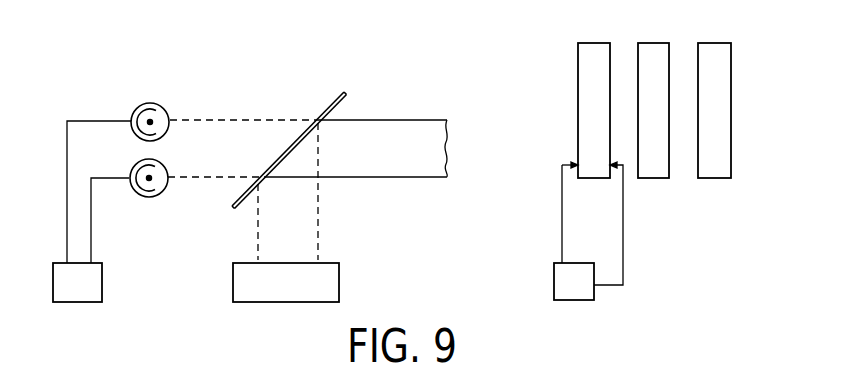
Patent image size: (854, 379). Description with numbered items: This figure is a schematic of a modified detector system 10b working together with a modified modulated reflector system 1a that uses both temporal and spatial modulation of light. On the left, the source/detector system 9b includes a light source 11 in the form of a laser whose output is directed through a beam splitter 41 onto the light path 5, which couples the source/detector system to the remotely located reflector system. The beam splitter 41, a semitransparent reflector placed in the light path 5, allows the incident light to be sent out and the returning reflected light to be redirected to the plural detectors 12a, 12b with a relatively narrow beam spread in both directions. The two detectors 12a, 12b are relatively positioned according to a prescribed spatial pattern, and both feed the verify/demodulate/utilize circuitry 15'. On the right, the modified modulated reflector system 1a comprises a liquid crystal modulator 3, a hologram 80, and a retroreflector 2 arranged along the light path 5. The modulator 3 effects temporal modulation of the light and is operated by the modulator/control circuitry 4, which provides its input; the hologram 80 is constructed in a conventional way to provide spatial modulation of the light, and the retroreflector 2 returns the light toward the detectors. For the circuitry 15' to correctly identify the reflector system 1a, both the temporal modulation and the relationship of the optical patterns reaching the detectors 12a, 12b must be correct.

The detector 12a is at (181, 73).
The detector 12b is at (153, 197).
The verify/demodulate/utilize circuitry 15' is at (108, 290).
The beam splitter 41 is at (318, 113).
The light path 5 is at (385, 121).
The light source 11 is at (340, 277).
The liquid crystal modulator 3 is at (595, 43).
The hologram 80 is at (663, 15).
The retroreflector 2 is at (727, 15).
The modulator/control circuitry 4 is at (570, 300).
The source/detector system 9b is at (226, 74).
The modified detector system 10b is at (448, 58).
The modified modulated reflector system 1a is at (683, 247).